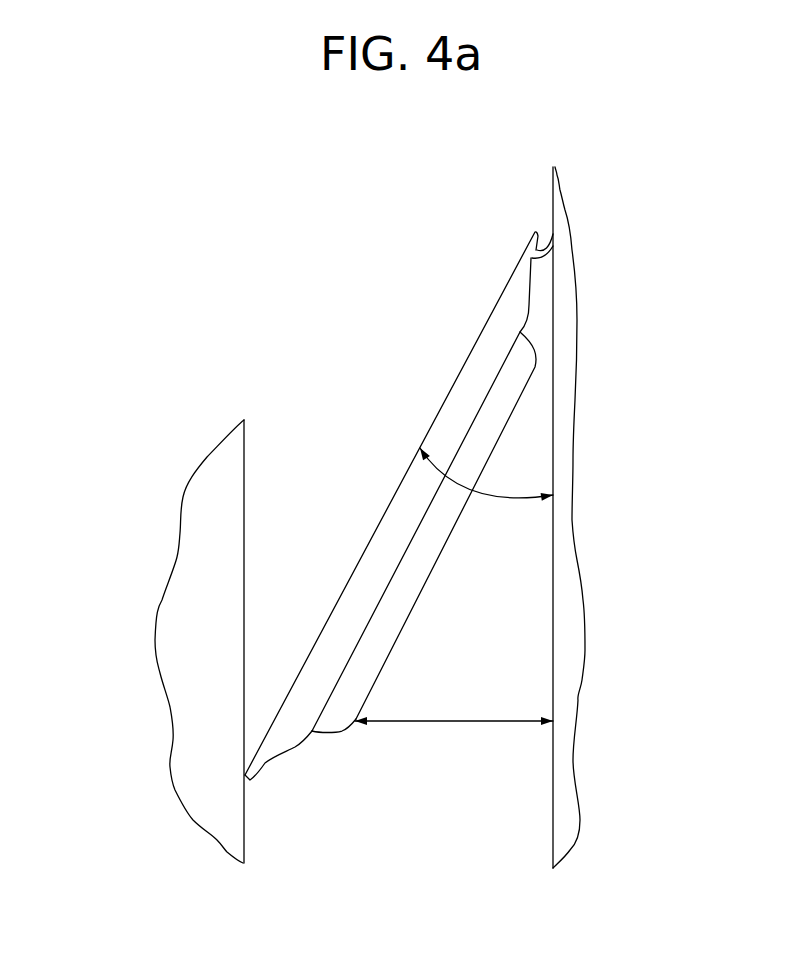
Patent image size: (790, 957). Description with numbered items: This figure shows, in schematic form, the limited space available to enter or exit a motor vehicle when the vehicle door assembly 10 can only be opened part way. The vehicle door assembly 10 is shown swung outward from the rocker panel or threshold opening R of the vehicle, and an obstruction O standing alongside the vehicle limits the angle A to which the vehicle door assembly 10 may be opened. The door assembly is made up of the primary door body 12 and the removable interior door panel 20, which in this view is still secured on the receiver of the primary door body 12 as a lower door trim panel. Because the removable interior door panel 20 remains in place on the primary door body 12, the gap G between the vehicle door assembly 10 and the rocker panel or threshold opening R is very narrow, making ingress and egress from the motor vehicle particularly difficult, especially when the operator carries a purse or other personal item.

The vehicle door assembly 10 is at (380, 506).
The primary door body 12 is at (457, 383).
The removable interior door panel 20 is at (407, 612).
The angle A is at (505, 497).
The rocker panel or threshold opening R is at (558, 575).
The gap G is at (447, 722).
The obstruction O is at (192, 778).